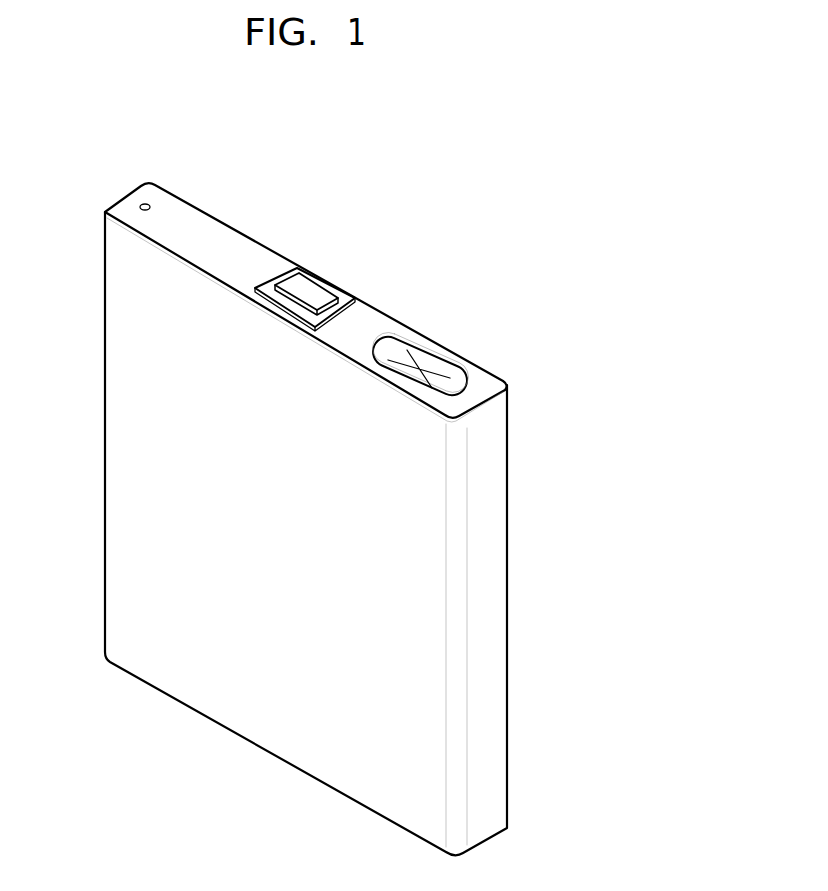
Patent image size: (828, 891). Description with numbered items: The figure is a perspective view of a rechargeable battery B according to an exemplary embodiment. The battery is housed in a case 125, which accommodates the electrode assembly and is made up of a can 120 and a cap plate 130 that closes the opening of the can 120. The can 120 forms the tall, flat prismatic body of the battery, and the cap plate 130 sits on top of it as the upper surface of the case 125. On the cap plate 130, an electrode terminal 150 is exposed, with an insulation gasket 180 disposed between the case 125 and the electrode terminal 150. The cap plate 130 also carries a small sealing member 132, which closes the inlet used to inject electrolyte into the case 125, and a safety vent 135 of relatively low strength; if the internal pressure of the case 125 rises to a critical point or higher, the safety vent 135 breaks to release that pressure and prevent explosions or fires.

The can 120 is at (497, 587).
The case 125 is at (598, 368).
The cap plate 130 is at (492, 392).
The sealing member 132 is at (140, 203).
The safety vent 135 is at (430, 360).
The electrode terminal 150 is at (303, 283).
The insulation gasket 180 is at (344, 295).
The rechargeable battery B is at (212, 740).